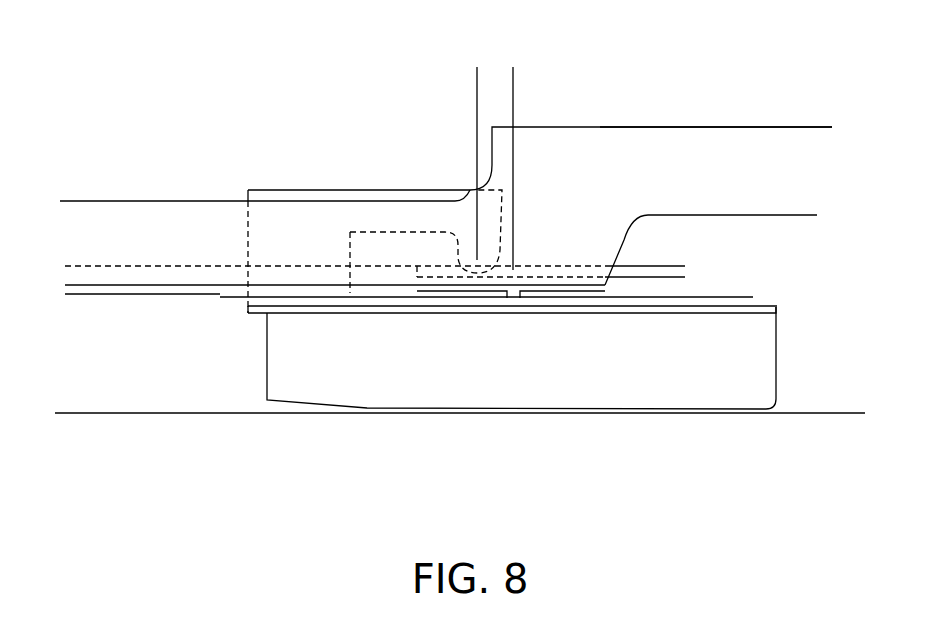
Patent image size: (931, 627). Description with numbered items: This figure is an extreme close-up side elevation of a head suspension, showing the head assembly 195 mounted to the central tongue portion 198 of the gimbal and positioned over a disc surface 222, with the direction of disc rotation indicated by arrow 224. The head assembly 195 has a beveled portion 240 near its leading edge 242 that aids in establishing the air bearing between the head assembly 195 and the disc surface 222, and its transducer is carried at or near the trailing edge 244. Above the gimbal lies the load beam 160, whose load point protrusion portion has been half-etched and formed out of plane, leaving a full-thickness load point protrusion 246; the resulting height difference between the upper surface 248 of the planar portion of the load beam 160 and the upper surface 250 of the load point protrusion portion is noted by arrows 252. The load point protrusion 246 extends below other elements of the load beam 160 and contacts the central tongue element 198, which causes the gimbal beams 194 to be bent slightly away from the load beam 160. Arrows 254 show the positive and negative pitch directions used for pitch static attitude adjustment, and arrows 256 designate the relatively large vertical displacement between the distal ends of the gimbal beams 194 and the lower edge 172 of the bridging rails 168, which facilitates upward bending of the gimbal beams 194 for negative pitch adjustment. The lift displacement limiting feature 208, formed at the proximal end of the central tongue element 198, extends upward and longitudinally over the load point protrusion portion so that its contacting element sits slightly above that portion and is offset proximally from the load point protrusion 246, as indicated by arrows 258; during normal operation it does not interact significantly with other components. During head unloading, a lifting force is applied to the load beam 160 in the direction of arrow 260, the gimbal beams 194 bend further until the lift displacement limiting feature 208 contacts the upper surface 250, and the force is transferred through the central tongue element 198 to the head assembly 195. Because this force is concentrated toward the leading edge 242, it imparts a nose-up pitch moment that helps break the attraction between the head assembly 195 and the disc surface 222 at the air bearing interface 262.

The load beam 160 is at (100, 232).
The bridging rails 168 is at (764, 153).
The lower edge of the bridging rails 172 is at (684, 215).
The gimbal beams 194 is at (544, 305).
The head assembly 195 is at (406, 372).
The central tongue portion 198 is at (483, 313).
The lift displacement limiting feature 208 is at (337, 190).
The disc surface 222 is at (818, 418).
The arrow indicating direction of disc rotation 224 is at (53, 431).
The beveled portion 240 is at (304, 404).
The leading edge 242 is at (267, 365).
The trailing edge 244 is at (776, 353).
The load point protrusion 246 is at (512, 296).
The upper surface of the planar portion of the load beam 248 is at (190, 266).
The upper surface of the load point protrusion portion 250 is at (591, 277).
The arrows indicating height difference 252 is at (652, 282).
The arrows indicating positive and negative pitch directions 254 is at (225, 385).
The arrows indicating vertical displacement 256 is at (792, 220).
The arrows indicating longitudinal offset 258 is at (453, 77).
The arrow indicating lifting force 260 is at (264, 130).
The air bearing interface 262 is at (370, 418).